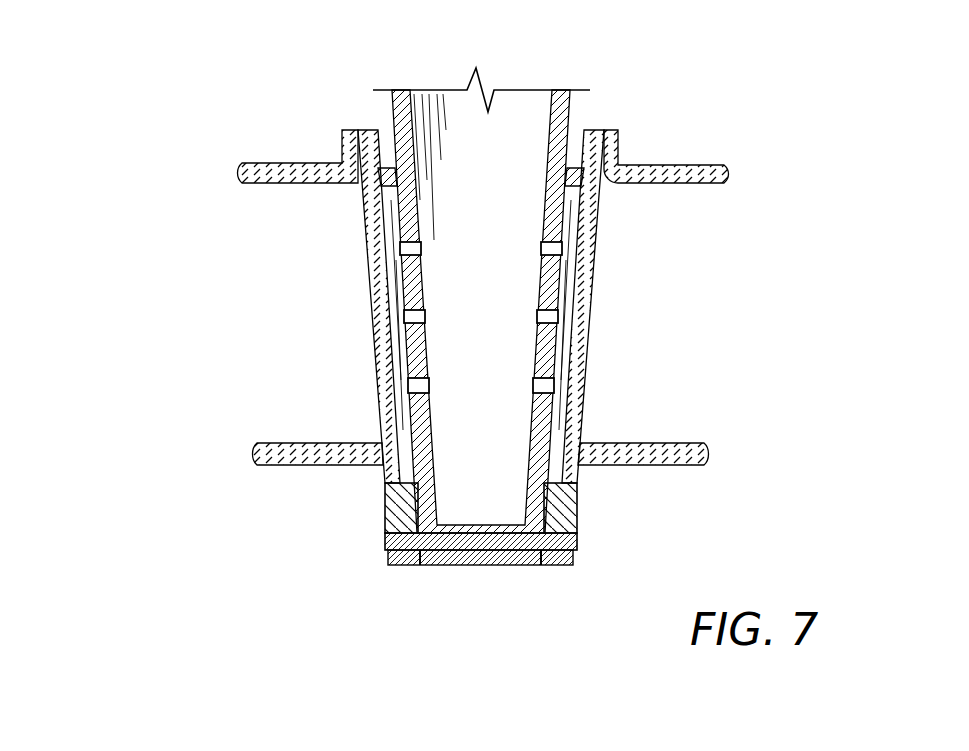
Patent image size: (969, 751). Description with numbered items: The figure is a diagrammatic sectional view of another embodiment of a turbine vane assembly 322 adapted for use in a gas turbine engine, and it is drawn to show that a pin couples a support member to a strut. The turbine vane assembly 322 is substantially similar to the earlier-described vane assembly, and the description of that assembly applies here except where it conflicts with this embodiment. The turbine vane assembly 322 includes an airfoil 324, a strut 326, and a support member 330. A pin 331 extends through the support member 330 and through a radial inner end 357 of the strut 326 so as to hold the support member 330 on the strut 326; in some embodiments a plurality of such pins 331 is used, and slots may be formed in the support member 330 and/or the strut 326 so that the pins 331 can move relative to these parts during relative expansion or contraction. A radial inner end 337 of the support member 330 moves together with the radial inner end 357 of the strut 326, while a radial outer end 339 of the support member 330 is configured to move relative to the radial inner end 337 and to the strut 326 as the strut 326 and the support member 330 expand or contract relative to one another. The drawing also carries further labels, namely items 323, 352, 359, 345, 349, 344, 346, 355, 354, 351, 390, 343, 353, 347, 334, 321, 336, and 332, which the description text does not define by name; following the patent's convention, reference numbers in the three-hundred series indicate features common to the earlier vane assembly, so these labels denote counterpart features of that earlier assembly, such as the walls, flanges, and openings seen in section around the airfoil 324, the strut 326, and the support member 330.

The turbine vane assembly 322 is at (205, 133).
The upper left flange 323 is at (287, 163).
The strut 326 is at (456, 130).
The left pocket 352 is at (384, 158).
The top wall 359 is at (577, 88).
The right pocket 345 is at (596, 150).
The upper right flange 349 is at (604, 180).
The right outer sleeve 344 is at (596, 246).
The left outer sleeve 346 is at (362, 204).
The inner passage 355 is at (509, 205).
The apertures 354 is at (546, 316).
The airfoil 324 is at (358, 246).
The inner tube 351 is at (405, 345).
The annular channel 390 is at (658, 302).
The aperture 343 is at (570, 373).
The tube wall 353 is at (438, 470).
The lower right flange 347 is at (574, 448).
The tube bottom 334 is at (421, 513).
The radial outer end 339 is at (382, 482).
The lower left flange 321 is at (265, 468).
The right support block 336 is at (577, 512).
The support member 330 is at (383, 527).
The radial inner end 337 is at (384, 570).
The support assembly 332 is at (582, 495).
The pin 331 is at (521, 560).
The radial inner end 357 is at (515, 568).